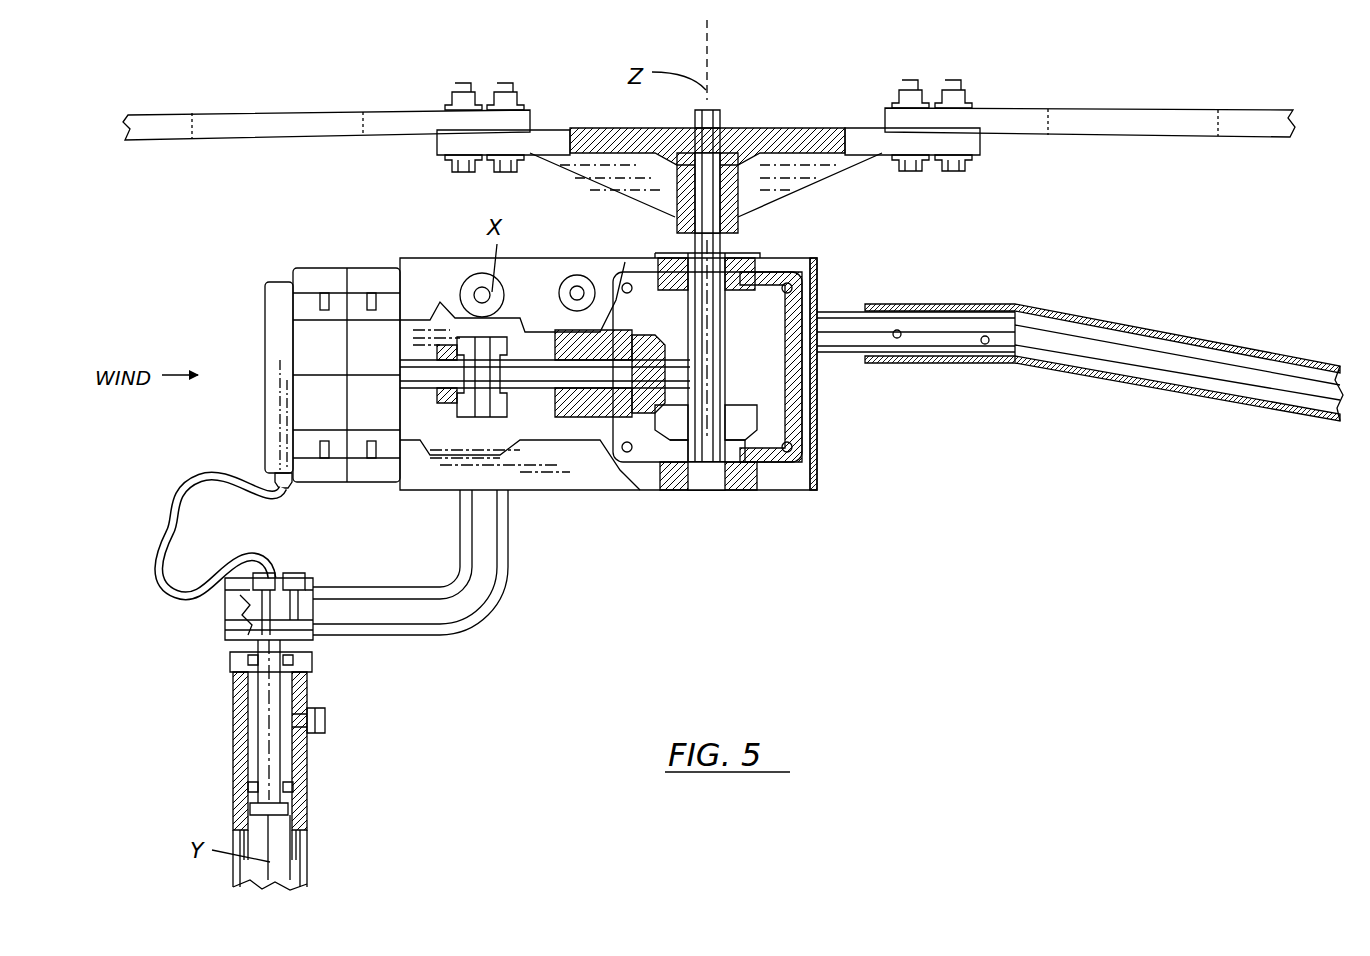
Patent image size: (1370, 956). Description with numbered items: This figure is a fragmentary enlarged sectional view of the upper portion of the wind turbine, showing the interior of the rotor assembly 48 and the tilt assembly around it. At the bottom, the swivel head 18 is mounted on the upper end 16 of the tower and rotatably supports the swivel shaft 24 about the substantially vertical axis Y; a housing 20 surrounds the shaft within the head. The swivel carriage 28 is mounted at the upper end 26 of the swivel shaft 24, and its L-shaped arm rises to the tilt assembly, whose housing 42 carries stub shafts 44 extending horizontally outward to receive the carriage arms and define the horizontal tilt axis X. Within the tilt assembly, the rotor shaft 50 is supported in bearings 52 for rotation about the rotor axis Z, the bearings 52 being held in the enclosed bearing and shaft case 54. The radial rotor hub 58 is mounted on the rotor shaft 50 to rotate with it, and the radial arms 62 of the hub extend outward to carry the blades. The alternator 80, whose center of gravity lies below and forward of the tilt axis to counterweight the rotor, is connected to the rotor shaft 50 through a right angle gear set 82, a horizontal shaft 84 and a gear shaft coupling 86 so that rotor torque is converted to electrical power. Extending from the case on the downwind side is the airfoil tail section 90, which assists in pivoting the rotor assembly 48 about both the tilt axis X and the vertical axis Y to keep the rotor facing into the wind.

The upper end 16 is at (310, 842).
The swivel head 18 is at (236, 610).
The bearing housing 20 is at (315, 665).
The swivel shaft 24 is at (280, 770).
The upper end 26 is at (282, 572).
The swivel carriage 28 is at (303, 578).
The housing 42 is at (818, 465).
The stub shafts 44 is at (468, 288).
The rotor assembly 48 is at (778, 210).
The rotor shaft 50 is at (713, 345).
The bearings 52 is at (677, 258).
The bearing and shaft case 54 is at (800, 410).
The radial rotor hub 58 is at (560, 158).
The radial arms 62 is at (548, 138).
The alternator 80 is at (265, 405).
The right angle gear set 82 is at (658, 448).
The horizontal drive shaft 84 is at (548, 372).
The gear shaft coupling 86 is at (445, 405).
The airfoil tail section 90 is at (1228, 412).